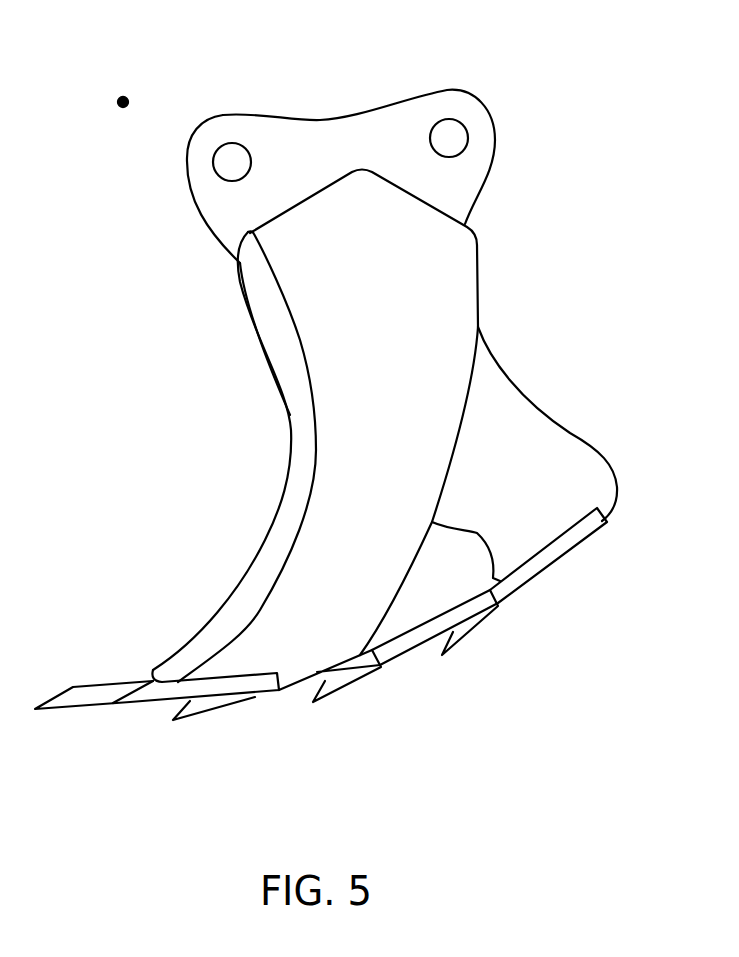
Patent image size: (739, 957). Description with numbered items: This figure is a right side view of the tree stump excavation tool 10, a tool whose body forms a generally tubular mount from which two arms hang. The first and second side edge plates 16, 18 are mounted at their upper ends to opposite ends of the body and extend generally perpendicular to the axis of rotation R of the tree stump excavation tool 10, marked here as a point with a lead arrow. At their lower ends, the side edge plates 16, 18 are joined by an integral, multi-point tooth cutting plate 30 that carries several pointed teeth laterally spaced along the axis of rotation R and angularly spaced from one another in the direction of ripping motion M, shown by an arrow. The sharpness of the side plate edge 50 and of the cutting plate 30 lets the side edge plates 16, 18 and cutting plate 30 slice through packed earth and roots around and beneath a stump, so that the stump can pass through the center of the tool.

The tree stump excavation tool 10 is at (167, 452).
The first side edge plate 16 is at (533, 482).
The second side edge plate 18 is at (388, 310).
The cutting plate 30 is at (403, 643).
The side plate edge 50 is at (280, 538).
The direction of ripping motion M is at (57, 601).
The axis of rotation R is at (118, 95).